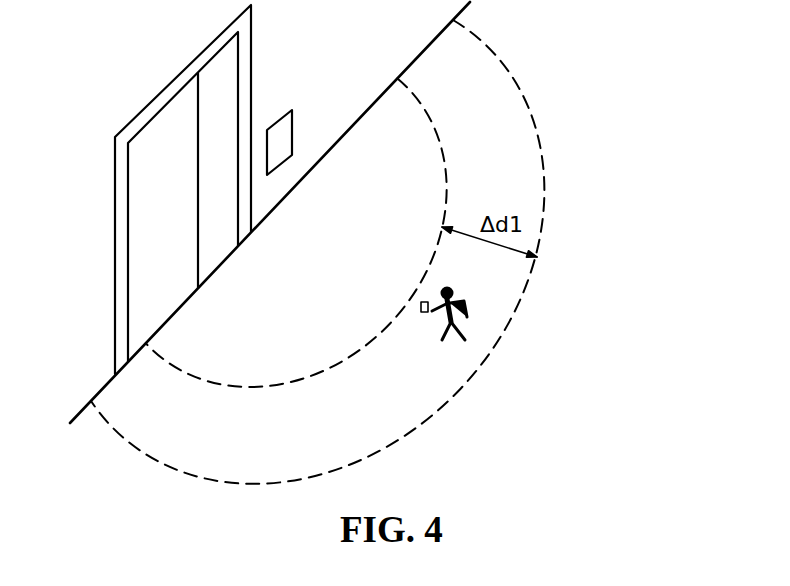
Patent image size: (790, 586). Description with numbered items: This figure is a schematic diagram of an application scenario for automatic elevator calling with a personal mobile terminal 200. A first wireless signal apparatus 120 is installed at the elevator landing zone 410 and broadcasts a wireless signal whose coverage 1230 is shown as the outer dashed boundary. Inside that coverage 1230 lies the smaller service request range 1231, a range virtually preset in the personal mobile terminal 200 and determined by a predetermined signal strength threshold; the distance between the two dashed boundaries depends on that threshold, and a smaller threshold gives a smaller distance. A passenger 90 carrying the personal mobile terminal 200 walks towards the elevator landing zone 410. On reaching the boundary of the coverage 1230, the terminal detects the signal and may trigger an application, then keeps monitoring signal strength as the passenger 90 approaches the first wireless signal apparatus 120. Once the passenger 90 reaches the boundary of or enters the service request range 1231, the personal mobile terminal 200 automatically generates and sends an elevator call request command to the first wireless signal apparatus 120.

The first wireless signal apparatus 120 is at (283, 160).
The elevator landing zone 410 is at (368, 252).
The coverage 1230 is at (547, 201).
The service request range 1231 is at (505, 122).
The personal mobile terminal 200 is at (422, 301).
The passenger 90 is at (457, 292).